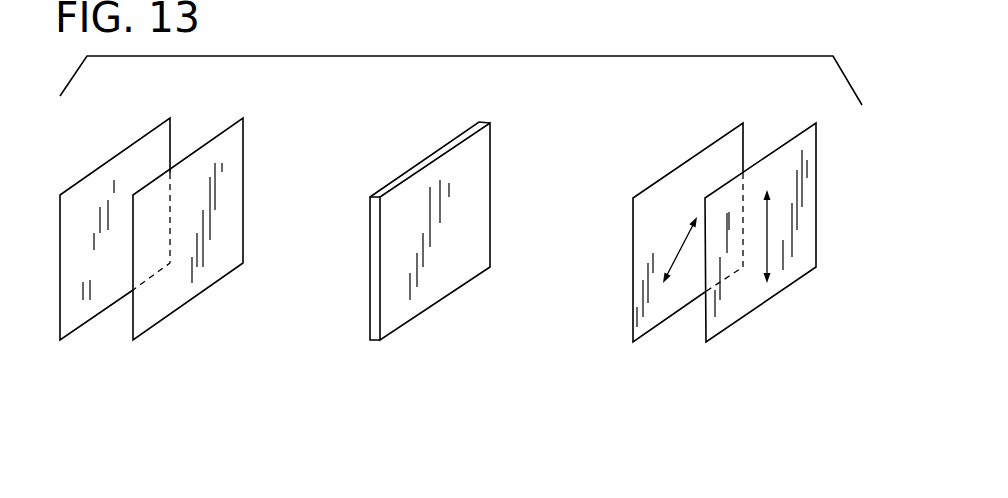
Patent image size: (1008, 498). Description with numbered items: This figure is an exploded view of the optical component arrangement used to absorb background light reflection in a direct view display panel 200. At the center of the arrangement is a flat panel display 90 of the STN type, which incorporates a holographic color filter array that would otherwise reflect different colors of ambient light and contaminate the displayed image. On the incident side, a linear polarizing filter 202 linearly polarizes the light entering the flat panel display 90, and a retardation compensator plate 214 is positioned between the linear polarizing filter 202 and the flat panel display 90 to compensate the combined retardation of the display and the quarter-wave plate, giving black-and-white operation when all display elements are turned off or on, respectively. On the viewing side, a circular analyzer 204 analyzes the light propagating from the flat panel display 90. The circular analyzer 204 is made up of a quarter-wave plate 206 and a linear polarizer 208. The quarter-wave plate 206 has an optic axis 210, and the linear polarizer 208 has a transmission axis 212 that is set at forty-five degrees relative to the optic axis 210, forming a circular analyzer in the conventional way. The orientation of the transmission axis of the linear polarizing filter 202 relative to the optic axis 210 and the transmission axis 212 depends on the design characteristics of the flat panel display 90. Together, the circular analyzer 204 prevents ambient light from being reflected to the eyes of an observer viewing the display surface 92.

The direct view display panel 200 is at (616, 131).
The linear polarizing filter 202 is at (72, 308).
The retardation compensator plate 214 is at (162, 307).
The flat panel display 90 is at (377, 330).
The quarter-wave plate 206 is at (633, 312).
The linear polarizer 208 is at (723, 332).
The display surface 92 is at (793, 273).
The optic axis 210 is at (675, 256).
The transmission axis 212 is at (768, 258).
The circular analyzer 204 is at (665, 367).